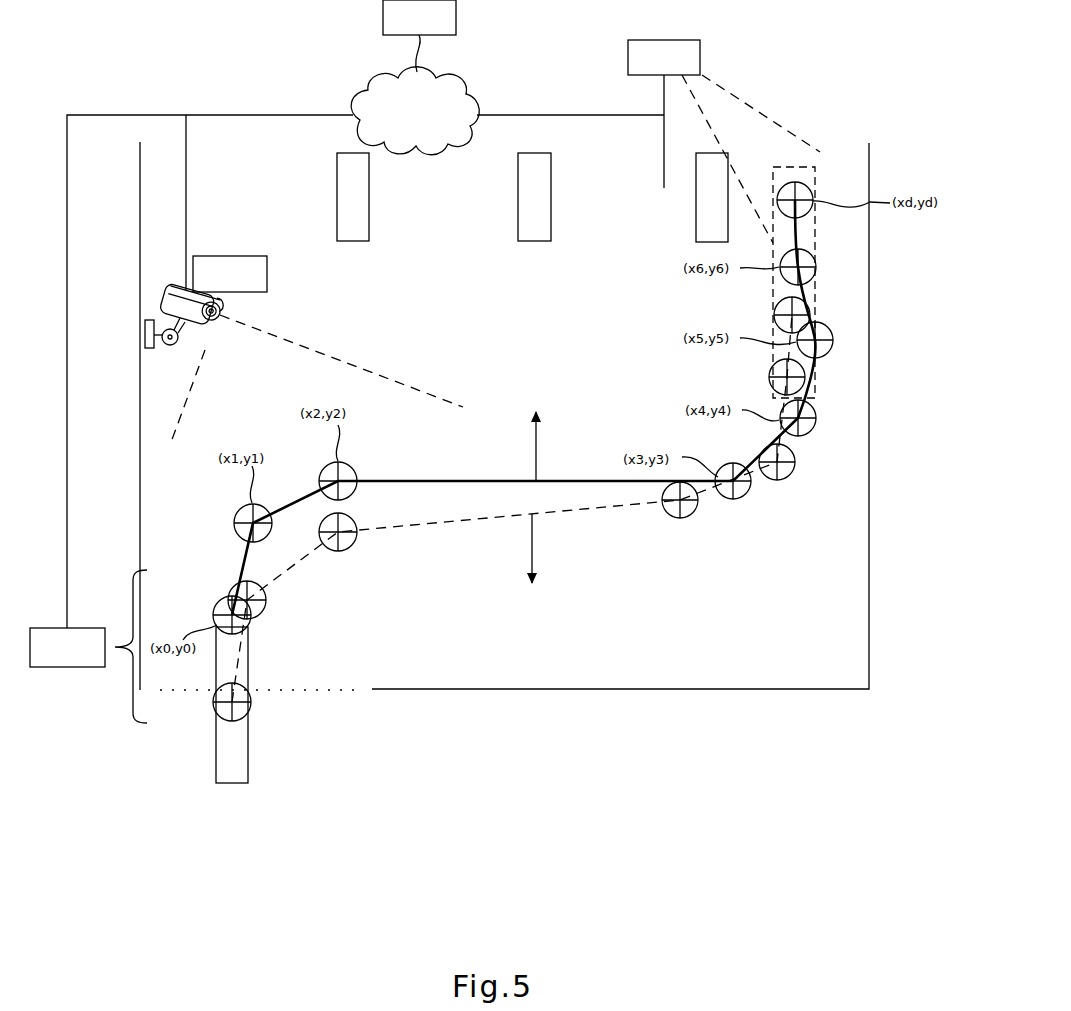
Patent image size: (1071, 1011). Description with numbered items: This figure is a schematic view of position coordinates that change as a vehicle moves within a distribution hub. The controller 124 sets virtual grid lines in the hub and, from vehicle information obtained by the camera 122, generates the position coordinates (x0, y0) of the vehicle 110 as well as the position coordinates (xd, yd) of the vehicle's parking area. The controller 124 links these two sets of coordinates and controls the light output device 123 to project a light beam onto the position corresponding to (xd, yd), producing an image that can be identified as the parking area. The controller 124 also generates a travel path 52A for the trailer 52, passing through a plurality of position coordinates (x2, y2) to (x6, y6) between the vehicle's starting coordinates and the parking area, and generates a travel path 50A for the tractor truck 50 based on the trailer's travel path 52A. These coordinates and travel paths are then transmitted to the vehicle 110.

The controller 124 is at (106, 308).
The light output device 123 is at (724, 141).
The camera 122 is at (230, 274).
The vehicle 110 is at (285, 741).
The tractor truck 50 is at (217, 600).
The trailer 52 is at (215, 760).
The travel path of the tractor truck 50A is at (536, 438).
The travel path of the trailer 52A is at (531, 561).